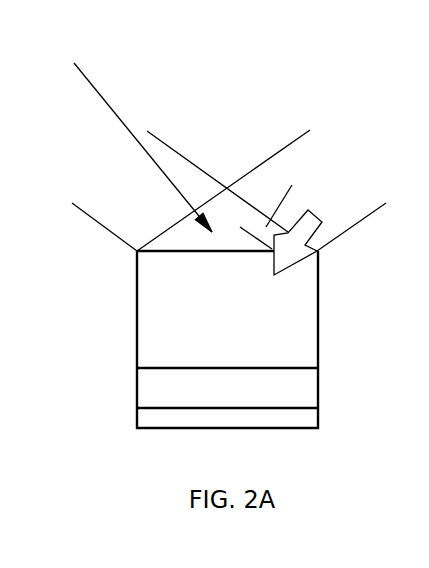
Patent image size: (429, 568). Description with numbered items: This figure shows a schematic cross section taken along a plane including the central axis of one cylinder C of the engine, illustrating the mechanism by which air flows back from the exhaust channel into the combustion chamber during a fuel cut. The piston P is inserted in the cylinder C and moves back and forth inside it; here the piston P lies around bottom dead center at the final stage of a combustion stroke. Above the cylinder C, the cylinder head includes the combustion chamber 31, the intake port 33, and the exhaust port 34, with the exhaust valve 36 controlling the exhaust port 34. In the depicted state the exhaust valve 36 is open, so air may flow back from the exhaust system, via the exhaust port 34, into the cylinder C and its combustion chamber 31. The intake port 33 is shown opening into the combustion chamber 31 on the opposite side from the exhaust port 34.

The combustion chamber 31 is at (134, 137).
The intake port 33 is at (160, 141).
The exhaust port 34 is at (267, 159).
The exhaust valve 36 is at (250, 233).
The cylinder C is at (137, 335).
The piston P is at (300, 390).